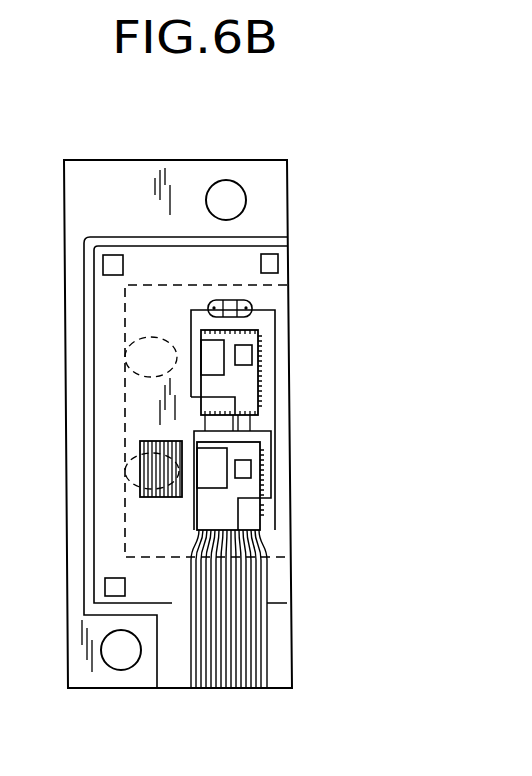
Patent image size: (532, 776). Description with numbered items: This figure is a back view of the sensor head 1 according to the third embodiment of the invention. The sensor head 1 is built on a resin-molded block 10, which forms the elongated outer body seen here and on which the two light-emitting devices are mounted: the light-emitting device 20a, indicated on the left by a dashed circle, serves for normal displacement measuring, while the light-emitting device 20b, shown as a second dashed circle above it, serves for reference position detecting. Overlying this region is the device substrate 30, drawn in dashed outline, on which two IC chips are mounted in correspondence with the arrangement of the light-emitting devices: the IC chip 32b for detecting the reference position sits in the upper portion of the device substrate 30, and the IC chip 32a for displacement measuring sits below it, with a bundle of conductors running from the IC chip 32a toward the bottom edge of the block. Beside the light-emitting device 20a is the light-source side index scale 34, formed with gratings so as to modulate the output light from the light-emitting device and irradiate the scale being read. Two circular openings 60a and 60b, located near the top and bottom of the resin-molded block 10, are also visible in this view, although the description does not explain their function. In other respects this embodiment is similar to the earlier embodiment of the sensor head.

The sensor head 1 is at (296, 117).
The resin-molded block 10 is at (73, 258).
The light-emitting device 20a is at (133, 458).
The light-emitting device 20b is at (137, 337).
The device substrate 30 is at (280, 297).
The IC chip 32a is at (260, 516).
The IC chip 32b is at (259, 364).
The light-source side index scale 34 is at (157, 498).
The mounting hole 60a is at (218, 181).
The mounting hole 60b is at (118, 671).